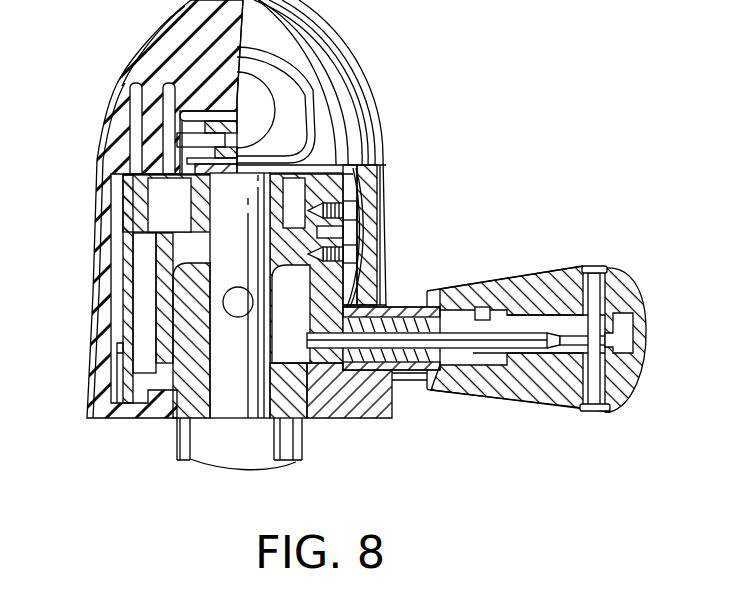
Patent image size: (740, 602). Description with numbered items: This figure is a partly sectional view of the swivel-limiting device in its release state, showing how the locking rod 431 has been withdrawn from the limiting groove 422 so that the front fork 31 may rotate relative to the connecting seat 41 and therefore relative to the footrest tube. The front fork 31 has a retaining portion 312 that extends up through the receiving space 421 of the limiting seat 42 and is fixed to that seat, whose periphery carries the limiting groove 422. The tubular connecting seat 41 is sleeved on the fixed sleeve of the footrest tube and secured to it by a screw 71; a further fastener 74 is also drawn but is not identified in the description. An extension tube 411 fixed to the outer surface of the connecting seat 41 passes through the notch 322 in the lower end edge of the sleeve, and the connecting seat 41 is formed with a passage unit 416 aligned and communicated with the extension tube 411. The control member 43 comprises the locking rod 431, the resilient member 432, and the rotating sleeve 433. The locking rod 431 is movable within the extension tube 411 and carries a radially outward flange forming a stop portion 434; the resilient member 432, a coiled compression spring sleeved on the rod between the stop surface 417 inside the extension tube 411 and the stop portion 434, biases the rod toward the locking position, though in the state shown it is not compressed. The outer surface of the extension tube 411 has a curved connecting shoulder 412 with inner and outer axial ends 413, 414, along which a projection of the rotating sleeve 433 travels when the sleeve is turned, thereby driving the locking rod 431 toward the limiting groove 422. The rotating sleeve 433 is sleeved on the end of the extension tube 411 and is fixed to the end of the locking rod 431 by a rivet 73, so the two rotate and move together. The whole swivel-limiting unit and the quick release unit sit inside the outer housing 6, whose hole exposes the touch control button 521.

The outer housing 6 is at (345, 111).
The touch control button 521 is at (282, 84).
The screw 74 is at (357, 203).
The screw 71 is at (357, 245).
The notch 322 is at (357, 270).
The extension tube 411 is at (408, 306).
The connecting seat 41 is at (150, 268).
The limiting seat 42 is at (155, 425).
The front fork 31 is at (168, 457).
The retaining portion 312 is at (247, 407).
The receiving space 421 is at (222, 390).
The limiting groove 422 is at (282, 350).
The passage unit 416 is at (322, 362).
The stop portion 434 is at (348, 363).
The locking rod 431 is at (535, 343).
The control member 43 is at (513, 362).
The resilient member 432 is at (447, 307).
The inner axial end 413 is at (468, 383).
The curved connecting shoulder 412 is at (481, 310).
The outer axial end 414 is at (492, 314).
The stop surface 417 is at (425, 374).
The rotating sleeve 433 is at (626, 272).
The rivet 73 is at (594, 412).